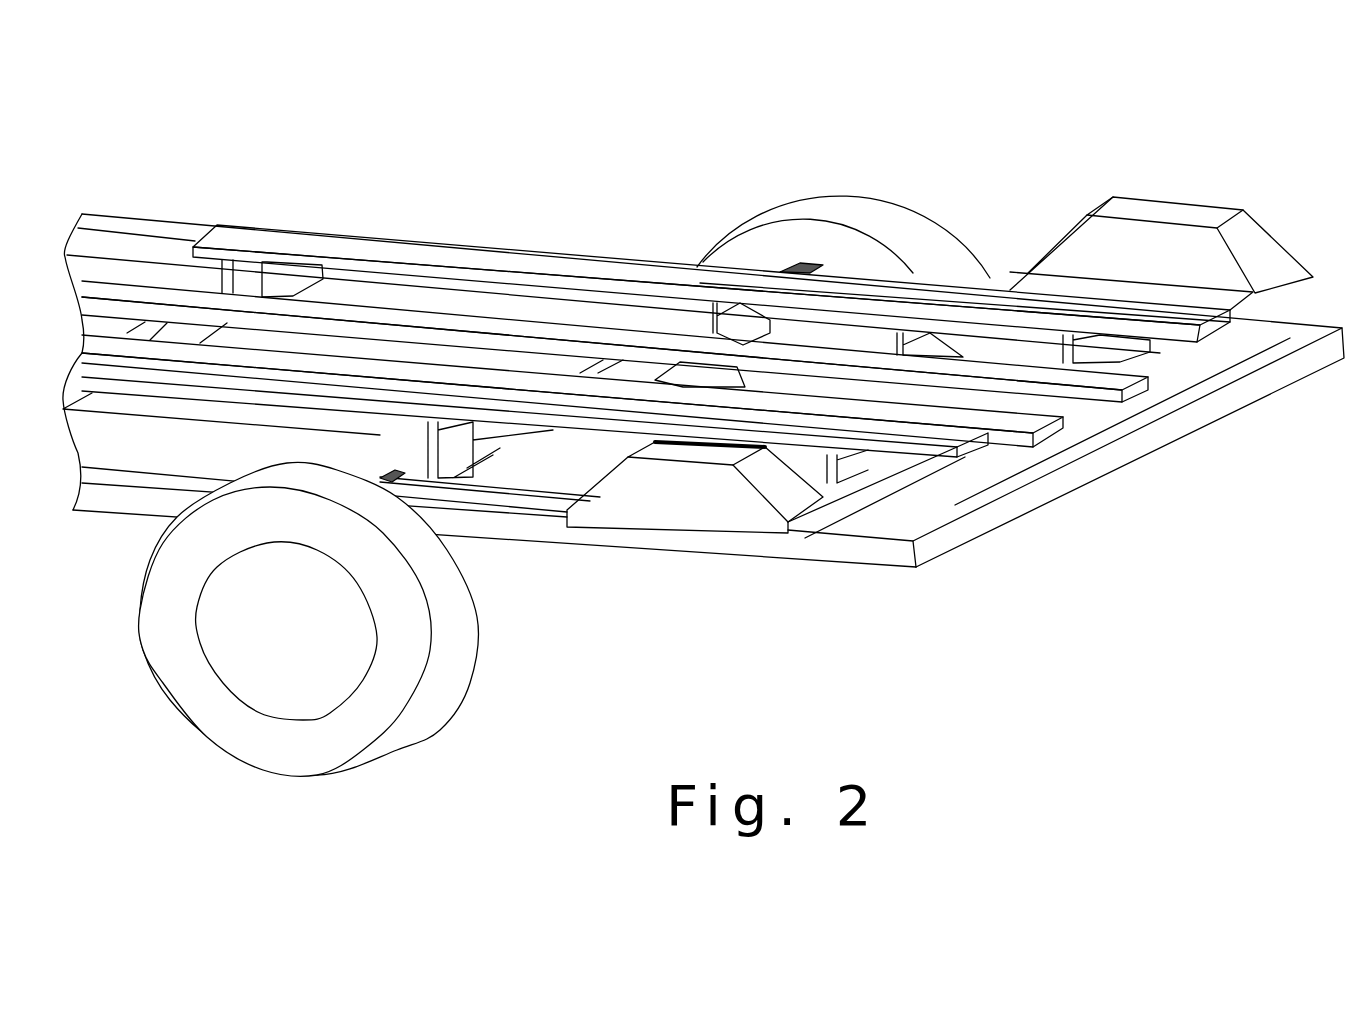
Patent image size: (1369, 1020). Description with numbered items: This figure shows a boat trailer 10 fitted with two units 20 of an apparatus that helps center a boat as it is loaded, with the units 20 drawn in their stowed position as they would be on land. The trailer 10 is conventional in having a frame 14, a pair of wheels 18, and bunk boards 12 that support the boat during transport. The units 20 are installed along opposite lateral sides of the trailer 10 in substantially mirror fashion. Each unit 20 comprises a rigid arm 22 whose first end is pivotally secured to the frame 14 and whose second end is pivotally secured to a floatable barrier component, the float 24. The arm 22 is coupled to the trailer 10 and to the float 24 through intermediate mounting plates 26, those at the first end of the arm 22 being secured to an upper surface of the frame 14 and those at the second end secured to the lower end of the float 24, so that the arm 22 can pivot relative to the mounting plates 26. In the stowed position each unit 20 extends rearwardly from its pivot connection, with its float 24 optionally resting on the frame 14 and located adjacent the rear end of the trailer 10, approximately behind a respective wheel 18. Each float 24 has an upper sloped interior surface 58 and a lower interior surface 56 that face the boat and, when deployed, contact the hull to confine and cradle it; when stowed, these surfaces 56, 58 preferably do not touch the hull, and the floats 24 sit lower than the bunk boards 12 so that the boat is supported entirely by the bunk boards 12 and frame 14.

The boat trailer 10 is at (535, 172).
The bunk boards 12 is at (360, 248).
The frame 14 is at (162, 205).
The wheels 18 is at (846, 194).
The units 20 is at (950, 377).
The rigid arm 22 is at (935, 275).
The float 24 is at (1270, 245).
The mounting plates 26 is at (798, 263).
The lower interior surface 56 is at (1083, 285).
The upper sloped interior surface 58 is at (1150, 238).